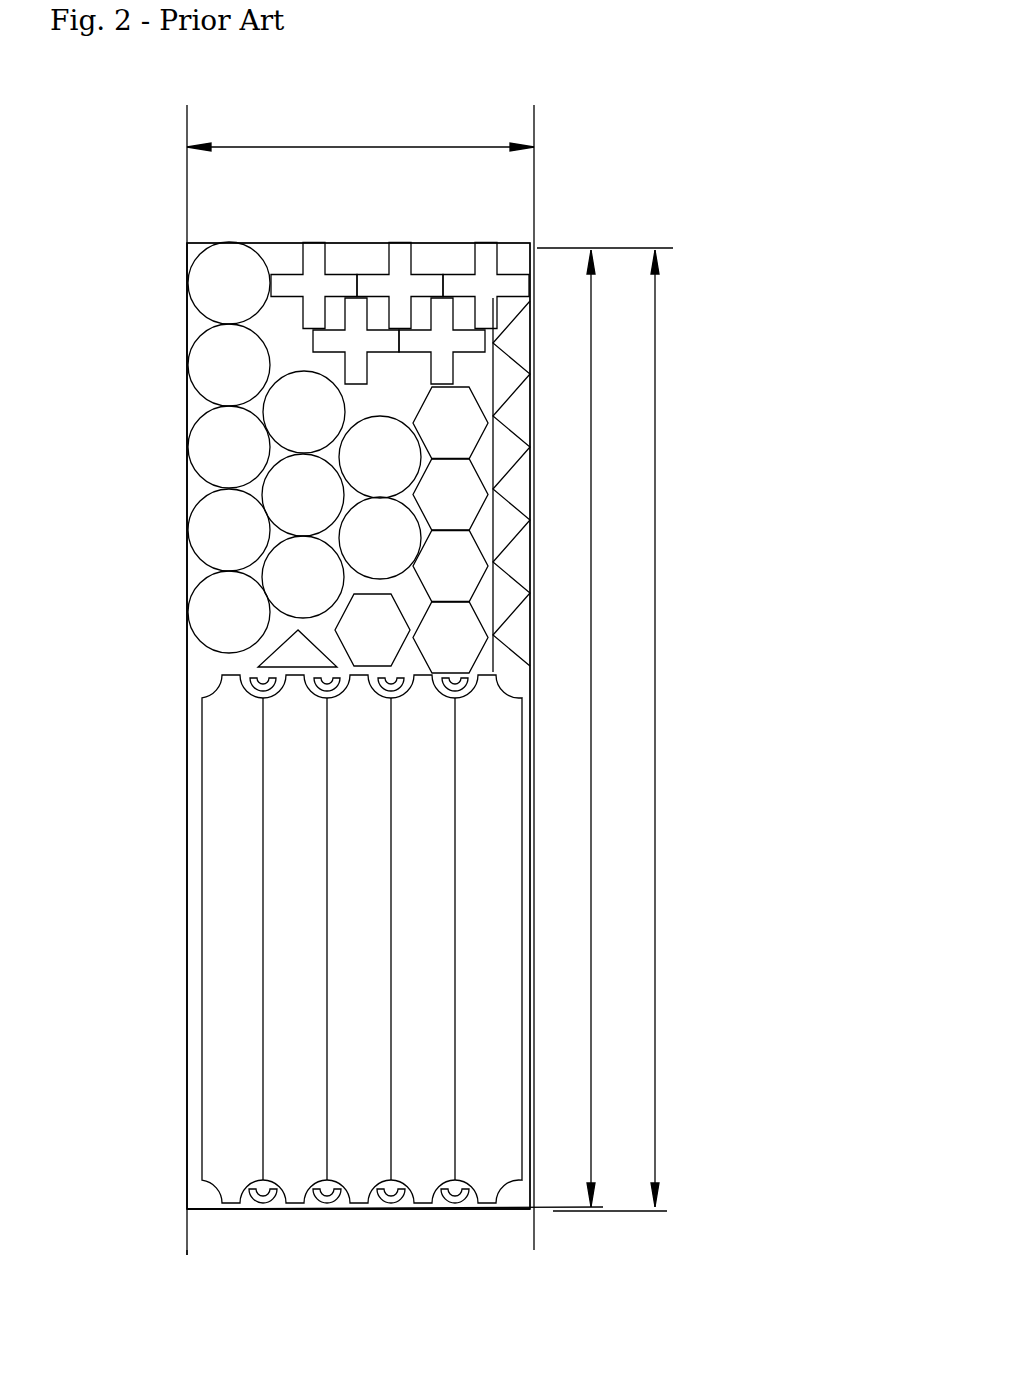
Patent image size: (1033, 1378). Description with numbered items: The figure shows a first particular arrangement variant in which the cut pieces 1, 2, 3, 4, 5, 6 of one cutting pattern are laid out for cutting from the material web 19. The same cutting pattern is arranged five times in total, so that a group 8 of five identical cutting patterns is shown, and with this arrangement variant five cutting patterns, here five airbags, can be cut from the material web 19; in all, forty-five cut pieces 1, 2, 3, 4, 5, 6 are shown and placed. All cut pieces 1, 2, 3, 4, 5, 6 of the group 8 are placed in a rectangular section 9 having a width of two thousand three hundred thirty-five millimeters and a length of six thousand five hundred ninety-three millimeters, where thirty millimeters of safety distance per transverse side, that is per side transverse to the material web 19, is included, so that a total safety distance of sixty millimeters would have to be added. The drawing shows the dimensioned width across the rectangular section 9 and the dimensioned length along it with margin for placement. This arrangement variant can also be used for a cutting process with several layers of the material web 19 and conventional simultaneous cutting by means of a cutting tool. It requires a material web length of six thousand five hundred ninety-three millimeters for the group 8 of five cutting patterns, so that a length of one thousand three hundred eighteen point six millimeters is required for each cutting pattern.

The cut piece 1 is at (222, 898).
The cut piece 2 is at (223, 295).
The cut piece 3 is at (465, 438).
The cut piece 4 is at (510, 637).
The cut piece 5 is at (507, 291).
The cut piece 6 is at (532, 1190).
The group of five identical cutting patterns 8 is at (760, 115).
The rectangular section 9 is at (186, 662).
The material web 19 is at (196, 1230).